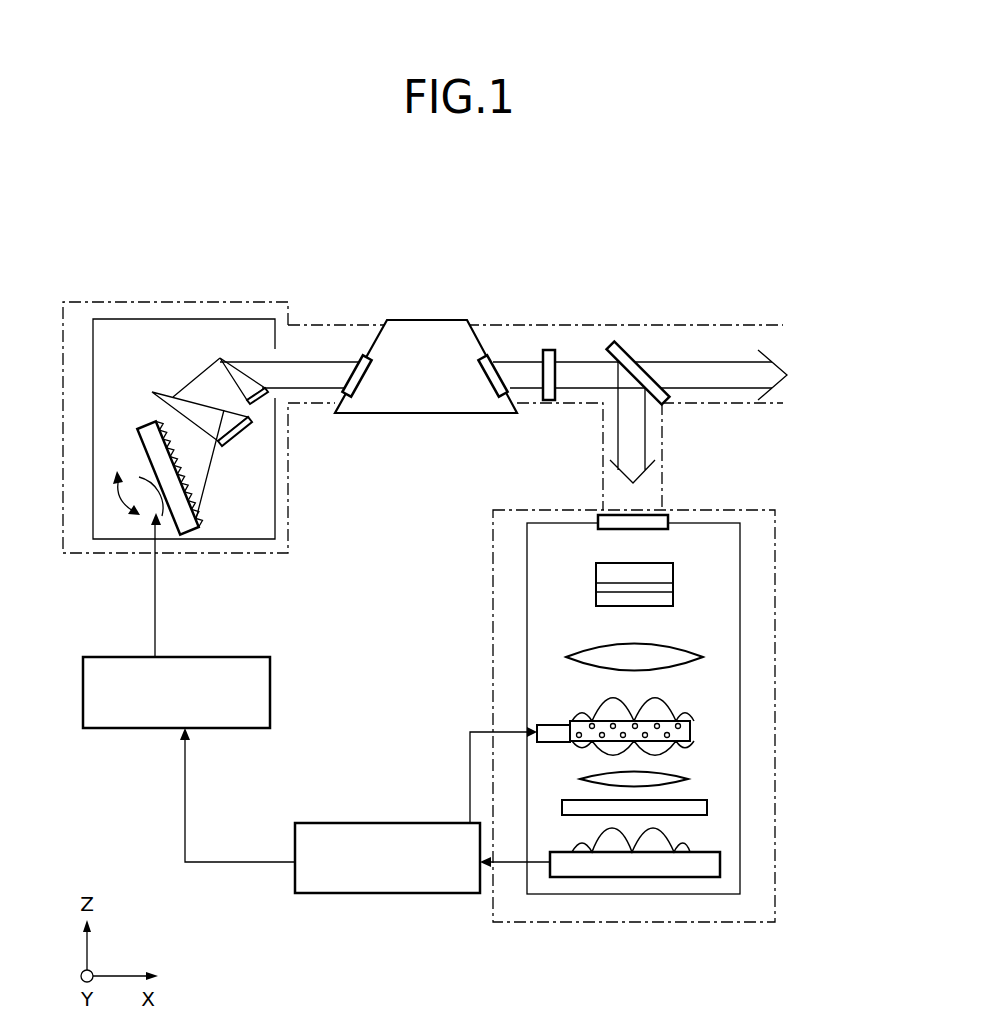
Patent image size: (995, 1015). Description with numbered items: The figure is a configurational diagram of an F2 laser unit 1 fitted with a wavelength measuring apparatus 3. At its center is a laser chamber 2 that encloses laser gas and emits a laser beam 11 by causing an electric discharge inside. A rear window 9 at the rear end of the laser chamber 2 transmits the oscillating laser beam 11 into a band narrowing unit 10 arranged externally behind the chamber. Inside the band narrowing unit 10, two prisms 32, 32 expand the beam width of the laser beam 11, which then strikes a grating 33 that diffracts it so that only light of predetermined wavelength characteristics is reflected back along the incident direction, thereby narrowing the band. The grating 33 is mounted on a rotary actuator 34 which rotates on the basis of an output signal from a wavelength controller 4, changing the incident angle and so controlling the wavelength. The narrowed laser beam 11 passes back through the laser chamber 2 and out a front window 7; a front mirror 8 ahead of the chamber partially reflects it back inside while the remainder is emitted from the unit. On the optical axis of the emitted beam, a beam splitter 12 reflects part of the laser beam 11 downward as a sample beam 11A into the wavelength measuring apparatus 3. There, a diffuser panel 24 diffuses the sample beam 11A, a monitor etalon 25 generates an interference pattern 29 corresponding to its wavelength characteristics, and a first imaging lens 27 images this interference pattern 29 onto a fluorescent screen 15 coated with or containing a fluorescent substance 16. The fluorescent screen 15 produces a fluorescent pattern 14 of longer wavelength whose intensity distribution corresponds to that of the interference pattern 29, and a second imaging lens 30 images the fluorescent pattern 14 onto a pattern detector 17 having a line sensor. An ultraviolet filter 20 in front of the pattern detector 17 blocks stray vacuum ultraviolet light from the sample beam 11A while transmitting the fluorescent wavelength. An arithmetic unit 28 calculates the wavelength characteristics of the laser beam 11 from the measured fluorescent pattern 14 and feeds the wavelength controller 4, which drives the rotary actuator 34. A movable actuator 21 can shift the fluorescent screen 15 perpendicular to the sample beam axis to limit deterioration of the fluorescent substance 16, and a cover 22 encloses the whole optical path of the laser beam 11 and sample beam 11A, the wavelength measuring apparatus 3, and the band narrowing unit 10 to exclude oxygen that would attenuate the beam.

The F2 laser unit 1 is at (443, 297).
The laser chamber 2 is at (427, 414).
The wavelength measuring apparatus 3 is at (477, 909).
The wavelength controller 4 is at (270, 683).
The front window 7 is at (495, 363).
The front mirror 8 is at (549, 350).
The rear window 9 is at (360, 355).
The band narrowing unit 10 is at (262, 540).
The laser beam 11 is at (320, 378).
The sample beam 11A is at (640, 448).
The beam splitter 12 is at (628, 352).
The fluorescent pattern 14 is at (660, 745).
The fluorescent screen 15 is at (690, 730).
The fluorescent substance 16 is at (680, 712).
The pattern detector 17 is at (720, 862).
The ultraviolet filter 20 is at (707, 807).
The movable actuator 21 is at (520, 718).
The cover 22 is at (288, 508).
The diffuser panel 24 is at (660, 530).
The monitor etalon 25 is at (673, 598).
The first imaging lens 27 is at (577, 648).
The arithmetic unit 28 is at (407, 822).
The interference pattern 29 is at (600, 705).
The second imaging lens 30 is at (688, 778).
The prism 32 is at (260, 398).
The grating 33 is at (197, 530).
The rotary actuator 34 is at (135, 470).